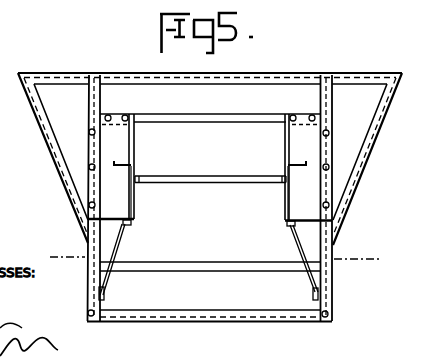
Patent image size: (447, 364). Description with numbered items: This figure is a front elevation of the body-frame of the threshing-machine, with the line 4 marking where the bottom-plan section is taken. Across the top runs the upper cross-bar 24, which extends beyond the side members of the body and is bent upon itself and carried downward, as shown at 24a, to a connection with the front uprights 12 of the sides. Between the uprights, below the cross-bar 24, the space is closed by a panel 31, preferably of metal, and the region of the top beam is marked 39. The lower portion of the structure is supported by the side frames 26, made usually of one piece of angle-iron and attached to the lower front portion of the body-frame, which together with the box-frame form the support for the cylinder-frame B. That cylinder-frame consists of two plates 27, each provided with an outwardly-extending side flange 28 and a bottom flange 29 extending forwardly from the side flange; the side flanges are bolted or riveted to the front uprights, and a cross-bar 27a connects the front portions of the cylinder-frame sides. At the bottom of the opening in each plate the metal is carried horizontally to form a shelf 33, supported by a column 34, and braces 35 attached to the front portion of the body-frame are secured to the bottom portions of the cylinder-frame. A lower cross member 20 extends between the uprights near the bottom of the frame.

The section line 4 4 is at (212, 255).
The front upright 12 is at (88, 101).
The lower cross rails 20 is at (247, 261).
The upper cross-bar 24 is at (279, 73).
The downwardly carried portion of upper cross-bar 24a is at (384, 153).
The side frame 26 is at (88, 298).
The plate 27 is at (287, 149).
The cross-bar 27a is at (236, 172).
The side flange 28 is at (209, 161).
The bottom flange 29 is at (210, 211).
The panel 31 is at (285, 103).
The shelf 33 is at (300, 157).
The column 34 is at (306, 203).
The brace 35 is at (115, 257).
The top beam 39 is at (175, 104).
The cylinder-frame B is at (136, 143).